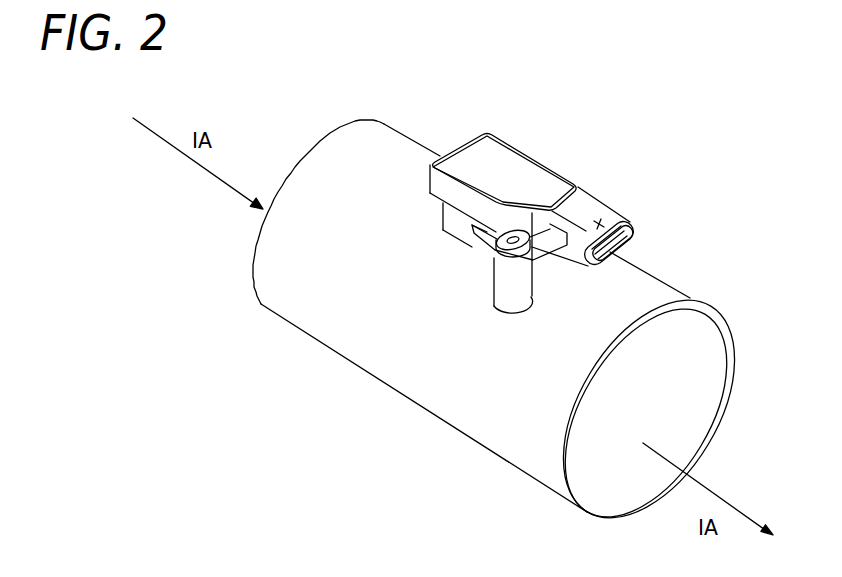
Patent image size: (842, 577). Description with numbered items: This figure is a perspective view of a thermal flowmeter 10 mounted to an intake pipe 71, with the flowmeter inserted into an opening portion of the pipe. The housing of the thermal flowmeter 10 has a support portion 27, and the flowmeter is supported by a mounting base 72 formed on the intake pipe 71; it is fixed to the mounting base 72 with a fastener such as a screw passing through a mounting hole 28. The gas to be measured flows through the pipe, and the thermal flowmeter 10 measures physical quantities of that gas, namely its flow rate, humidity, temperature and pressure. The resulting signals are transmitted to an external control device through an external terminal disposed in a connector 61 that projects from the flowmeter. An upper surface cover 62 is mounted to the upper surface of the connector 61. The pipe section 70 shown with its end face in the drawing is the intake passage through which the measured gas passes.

The thermal flowmeter 10 is at (602, 100).
The support portion 27 is at (480, 229).
The mounting hole 28 is at (516, 233).
The connector 61 is at (585, 222).
The upper surface cover 62 is at (509, 168).
The intake pipe 70 is at (667, 423).
The intake pipe 71 is at (393, 162).
The mounting base 72 is at (505, 294).